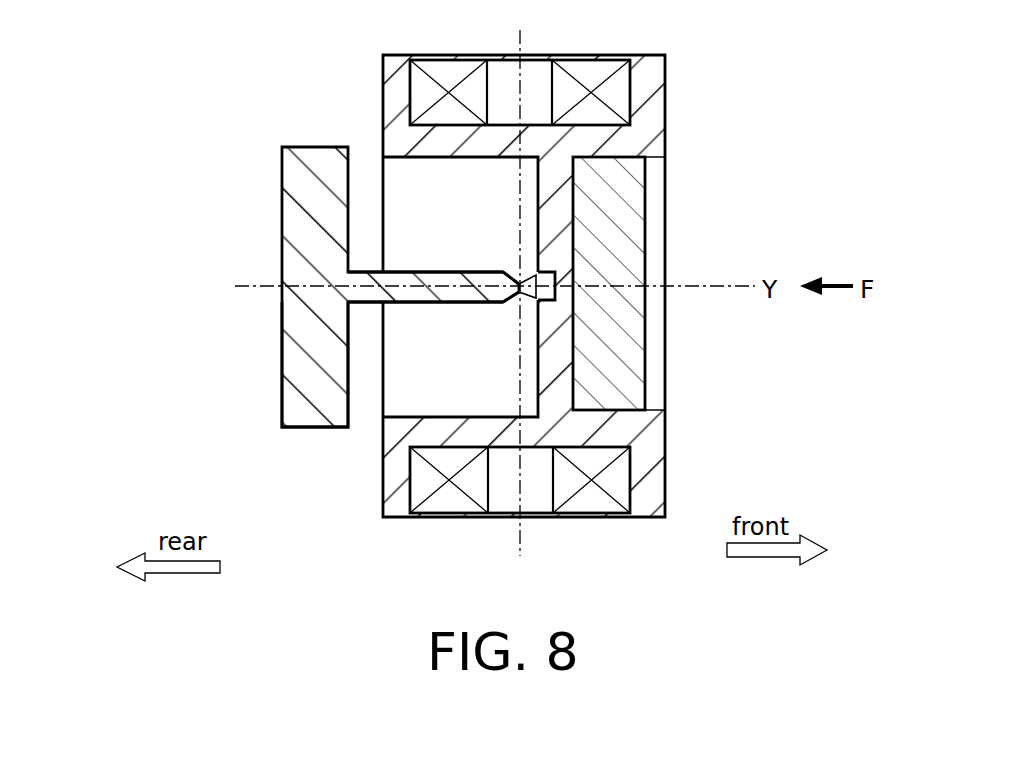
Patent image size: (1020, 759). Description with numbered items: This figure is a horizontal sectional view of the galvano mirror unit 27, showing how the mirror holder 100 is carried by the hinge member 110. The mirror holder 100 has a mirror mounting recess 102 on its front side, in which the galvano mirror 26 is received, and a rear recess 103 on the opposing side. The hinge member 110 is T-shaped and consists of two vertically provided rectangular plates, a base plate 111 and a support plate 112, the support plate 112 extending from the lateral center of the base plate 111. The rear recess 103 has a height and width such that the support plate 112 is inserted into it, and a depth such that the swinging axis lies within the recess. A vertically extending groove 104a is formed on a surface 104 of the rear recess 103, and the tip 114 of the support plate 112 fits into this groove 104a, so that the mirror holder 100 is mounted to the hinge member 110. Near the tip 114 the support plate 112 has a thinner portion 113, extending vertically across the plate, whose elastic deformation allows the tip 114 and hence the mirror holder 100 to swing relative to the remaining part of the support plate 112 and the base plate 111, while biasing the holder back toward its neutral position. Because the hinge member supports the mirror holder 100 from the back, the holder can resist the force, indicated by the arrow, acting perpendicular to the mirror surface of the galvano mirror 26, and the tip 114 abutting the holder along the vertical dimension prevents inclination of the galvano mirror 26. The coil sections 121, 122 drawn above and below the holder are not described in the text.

The galvano mirror unit 27 is at (735, 67).
The mirror holder 100 is at (680, 118).
The mirror mounting recess 102 is at (657, 416).
The rear recess 103 is at (462, 381).
The surface of the rear recess 104 is at (550, 211).
The vertically extending groove 104a is at (556, 285).
The galvano mirror 26 is at (620, 322).
The hinge member 110 is at (270, 206).
The base plate 111 is at (314, 413).
The support plate 112 is at (385, 297).
The thinner portion 113 is at (519, 286).
The tip of the support plate 114 is at (533, 299).
The upper coil 121 is at (583, 73).
The lower coil 122 is at (590, 497).